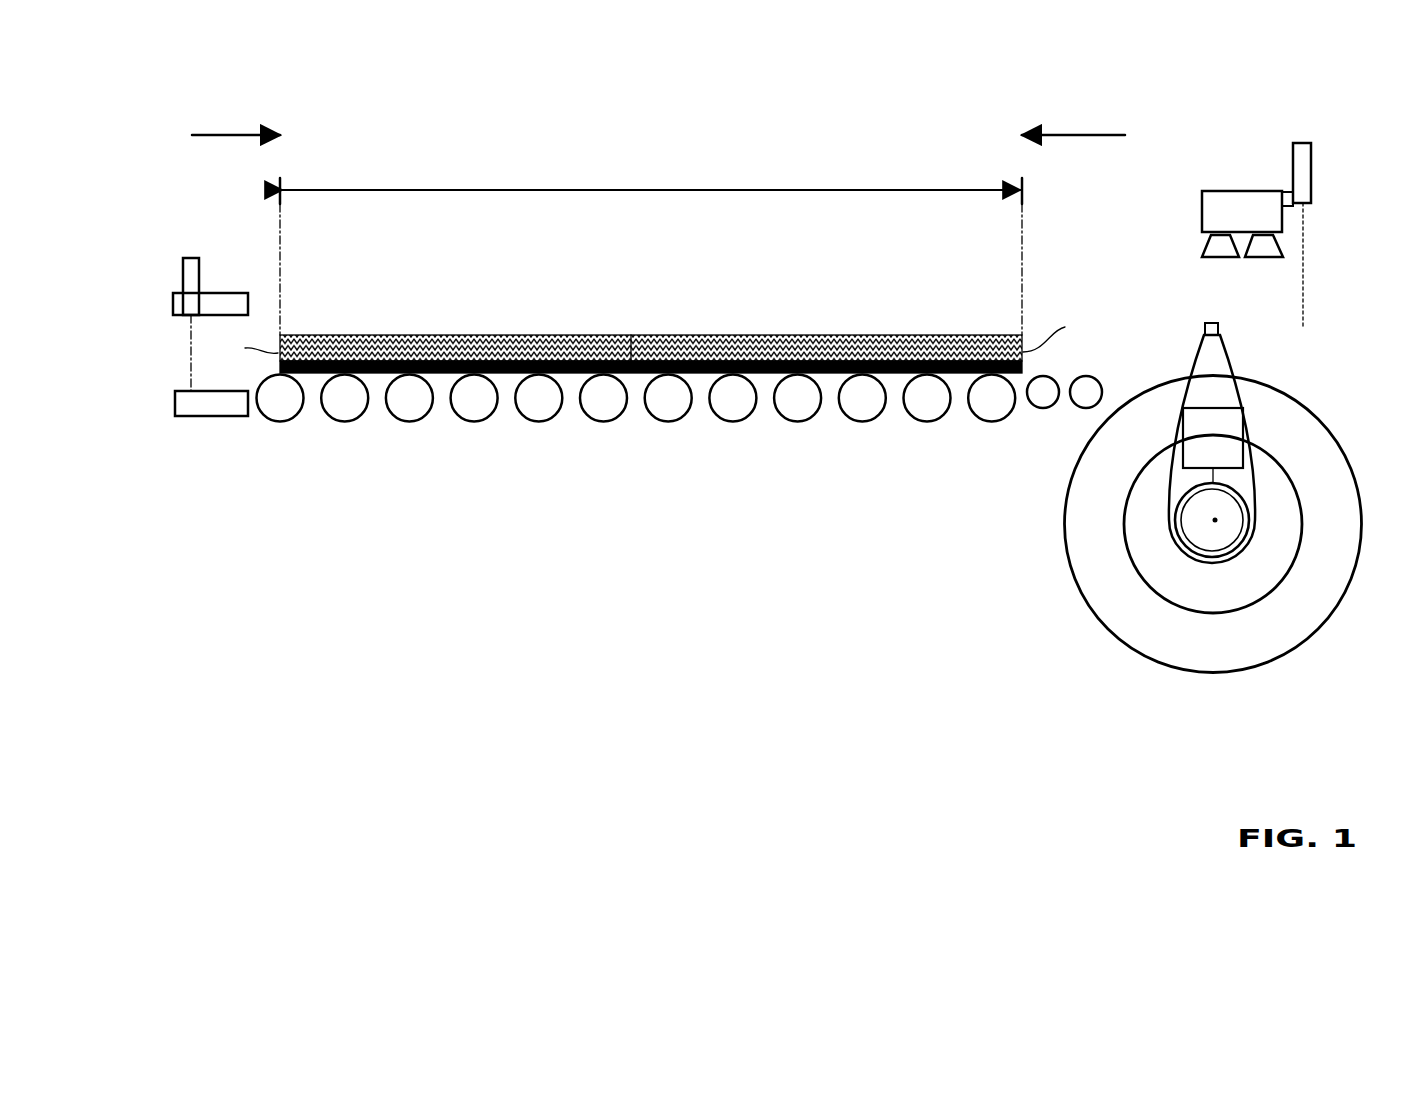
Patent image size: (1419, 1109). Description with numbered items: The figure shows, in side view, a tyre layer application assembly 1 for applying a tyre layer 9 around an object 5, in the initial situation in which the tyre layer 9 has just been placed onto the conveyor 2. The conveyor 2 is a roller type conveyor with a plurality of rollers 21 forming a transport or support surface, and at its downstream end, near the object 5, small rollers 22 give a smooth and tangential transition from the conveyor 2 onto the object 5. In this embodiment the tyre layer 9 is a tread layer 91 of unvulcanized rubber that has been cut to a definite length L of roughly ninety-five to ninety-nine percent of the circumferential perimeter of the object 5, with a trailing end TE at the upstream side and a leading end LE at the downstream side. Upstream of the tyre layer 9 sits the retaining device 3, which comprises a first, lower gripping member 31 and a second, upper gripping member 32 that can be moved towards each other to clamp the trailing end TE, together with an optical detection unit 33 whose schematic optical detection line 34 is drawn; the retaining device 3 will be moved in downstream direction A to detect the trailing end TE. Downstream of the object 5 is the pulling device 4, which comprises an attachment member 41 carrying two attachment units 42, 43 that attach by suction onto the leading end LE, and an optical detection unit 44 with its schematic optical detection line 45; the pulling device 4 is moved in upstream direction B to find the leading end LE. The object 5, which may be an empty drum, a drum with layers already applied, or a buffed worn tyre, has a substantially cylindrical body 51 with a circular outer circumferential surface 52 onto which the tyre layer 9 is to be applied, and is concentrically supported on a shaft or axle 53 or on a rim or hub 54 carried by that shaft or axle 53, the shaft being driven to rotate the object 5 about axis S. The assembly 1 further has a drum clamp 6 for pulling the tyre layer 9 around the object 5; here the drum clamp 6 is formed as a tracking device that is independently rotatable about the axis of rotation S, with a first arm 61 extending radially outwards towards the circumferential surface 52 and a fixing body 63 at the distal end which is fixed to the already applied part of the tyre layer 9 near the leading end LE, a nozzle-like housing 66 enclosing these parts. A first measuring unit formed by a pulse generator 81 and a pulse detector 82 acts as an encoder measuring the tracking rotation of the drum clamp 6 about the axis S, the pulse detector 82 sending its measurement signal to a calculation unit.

The tyre layer application assembly 1 is at (461, 614).
The conveyor 2 is at (413, 412).
The rollers 21 is at (483, 412).
The small rollers 22 is at (1086, 398).
The retaining device 3 is at (185, 408).
The first, lower gripping member 31 is at (235, 405).
The second, upper gripping member 32 is at (226, 298).
The optical detection unit 33 is at (190, 268).
The optical detection line 34 is at (186, 347).
The pulling device 4 is at (1217, 200).
The attachment member 41 is at (1215, 220).
The attachment unit 42 is at (1215, 250).
The attachment unit 43 is at (1268, 250).
The optical detection unit 44 is at (1305, 163).
The optical detection line 45 is at (1303, 280).
The object 5 is at (1158, 650).
The cylindrical body 51 is at (1118, 620).
The outer circumferential surface 52 is at (1073, 582).
The shaft or axle 53 is at (1218, 532).
The rim or hub 54 is at (1258, 577).
The drum clamp 6 is at (1300, 490).
The first arm 61 is at (1252, 425).
The fixing body 63 is at (1207, 326).
The nozzle body 66 is at (1220, 362).
The pulse generator 81 is at (1180, 525).
The pulse detector 82 is at (1197, 438).
The tyre layer 9 is at (462, 338).
The tread layer 91 is at (631, 357).